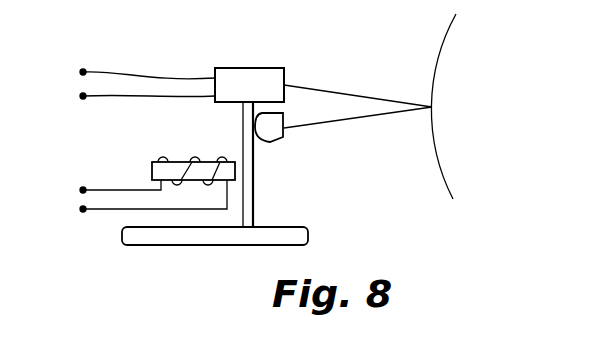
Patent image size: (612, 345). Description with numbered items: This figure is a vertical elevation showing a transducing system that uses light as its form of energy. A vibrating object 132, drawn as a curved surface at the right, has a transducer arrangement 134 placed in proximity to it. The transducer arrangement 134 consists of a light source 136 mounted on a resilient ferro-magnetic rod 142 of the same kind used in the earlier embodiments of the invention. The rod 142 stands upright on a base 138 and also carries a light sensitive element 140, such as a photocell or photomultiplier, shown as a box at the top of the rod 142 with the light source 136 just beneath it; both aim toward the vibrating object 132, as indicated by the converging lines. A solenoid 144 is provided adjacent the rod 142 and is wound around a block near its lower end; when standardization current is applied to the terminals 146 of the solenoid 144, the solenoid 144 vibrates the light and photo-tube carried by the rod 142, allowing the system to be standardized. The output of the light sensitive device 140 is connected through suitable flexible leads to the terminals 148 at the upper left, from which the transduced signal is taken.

The vibrating object 132 is at (442, 57).
The transducer arrangement 134 is at (292, 53).
The light source 136 is at (285, 131).
The base 138 is at (306, 227).
The light sensitive element (photocell or photomultiplier) 140 is at (257, 68).
The resilient ferro-magnetic rod 142 is at (245, 133).
The solenoid 144 is at (152, 164).
The terminals of the solenoid 146 is at (83, 209).
The terminals 148 is at (83, 72).